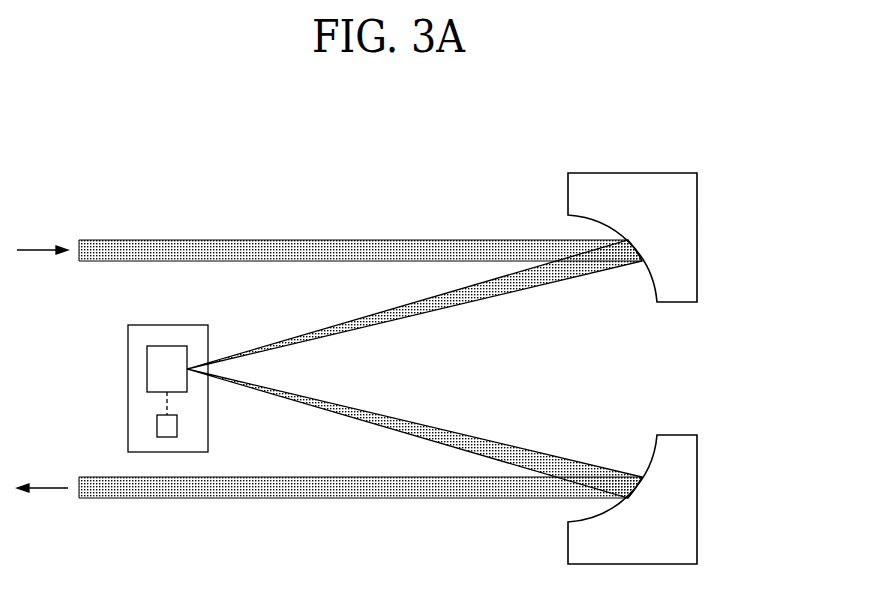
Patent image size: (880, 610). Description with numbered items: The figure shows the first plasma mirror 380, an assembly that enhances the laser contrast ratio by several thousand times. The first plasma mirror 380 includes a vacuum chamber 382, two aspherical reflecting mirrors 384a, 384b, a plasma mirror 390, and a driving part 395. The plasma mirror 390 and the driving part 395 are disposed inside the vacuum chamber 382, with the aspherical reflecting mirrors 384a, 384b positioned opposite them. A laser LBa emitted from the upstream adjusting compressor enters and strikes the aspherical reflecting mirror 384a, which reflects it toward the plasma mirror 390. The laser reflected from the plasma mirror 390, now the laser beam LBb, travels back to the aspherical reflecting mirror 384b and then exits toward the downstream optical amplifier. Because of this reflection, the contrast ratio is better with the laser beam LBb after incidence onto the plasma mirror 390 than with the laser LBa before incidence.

The first plasma mirror 380 is at (766, 110).
The vacuum chamber 382 is at (128, 339).
The plasma mirror 390 is at (140, 368).
The driving part 395 is at (157, 423).
The aspherical reflecting mirror 384a is at (683, 226).
The aspherical reflecting mirror 384b is at (683, 508).
The laser LBa is at (157, 248).
The laser beam LBb is at (157, 487).